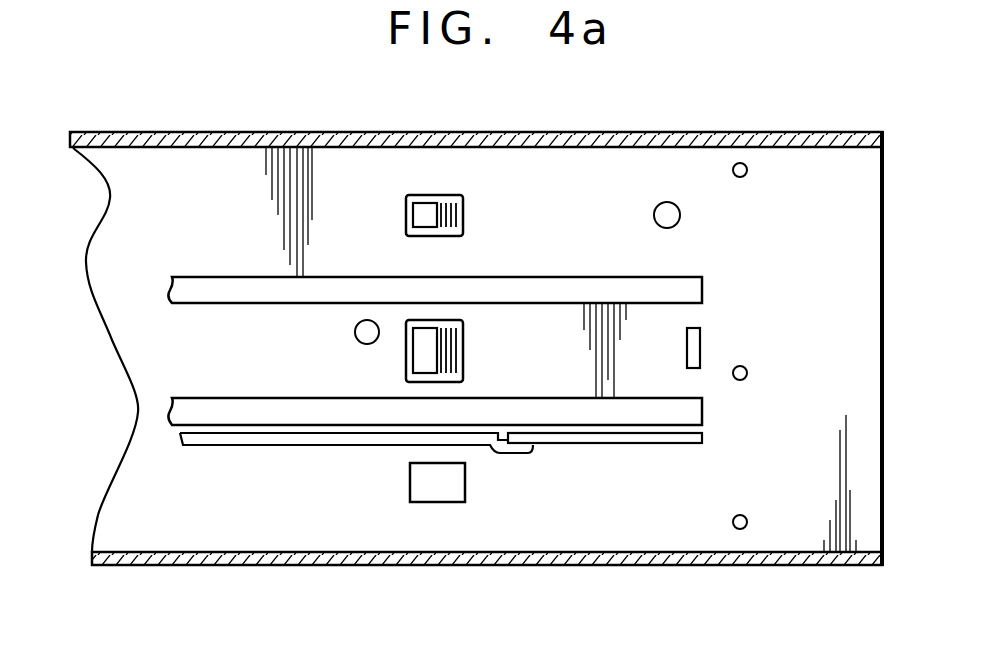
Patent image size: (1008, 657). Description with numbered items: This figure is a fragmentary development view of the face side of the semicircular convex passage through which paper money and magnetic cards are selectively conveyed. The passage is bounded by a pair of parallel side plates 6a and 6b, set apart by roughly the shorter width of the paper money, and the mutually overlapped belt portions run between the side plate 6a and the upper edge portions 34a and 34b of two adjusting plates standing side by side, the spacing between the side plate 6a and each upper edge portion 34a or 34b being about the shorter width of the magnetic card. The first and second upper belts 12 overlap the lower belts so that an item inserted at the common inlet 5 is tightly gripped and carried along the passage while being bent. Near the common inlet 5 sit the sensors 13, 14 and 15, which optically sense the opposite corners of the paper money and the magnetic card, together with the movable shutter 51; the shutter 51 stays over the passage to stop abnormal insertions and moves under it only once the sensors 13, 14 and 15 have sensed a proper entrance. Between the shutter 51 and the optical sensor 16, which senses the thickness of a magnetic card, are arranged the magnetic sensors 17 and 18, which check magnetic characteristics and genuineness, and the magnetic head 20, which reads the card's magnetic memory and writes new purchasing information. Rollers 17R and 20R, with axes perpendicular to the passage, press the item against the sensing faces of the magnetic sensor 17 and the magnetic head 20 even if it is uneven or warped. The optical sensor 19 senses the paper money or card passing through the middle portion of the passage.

The common inlet 5 is at (845, 316).
The side plate 6a is at (317, 134).
The side plate 6b is at (328, 566).
The upper belt 12 is at (258, 288).
The sensor 13 is at (747, 167).
The sensor 14 is at (747, 370).
The sensor 15 is at (775, 507).
The optical sensor 16 is at (662, 205).
The magnetic sensor 17 is at (463, 214).
The roller 17R is at (410, 214).
The magnetic sensor 18 is at (465, 480).
The optical sensor 19 is at (355, 333).
The magnetic head 20 is at (463, 362).
The roller 20R is at (463, 338).
The upper edge portion 34a is at (604, 445).
The upper edge portion 34b is at (246, 446).
The shutter 51 is at (700, 338).